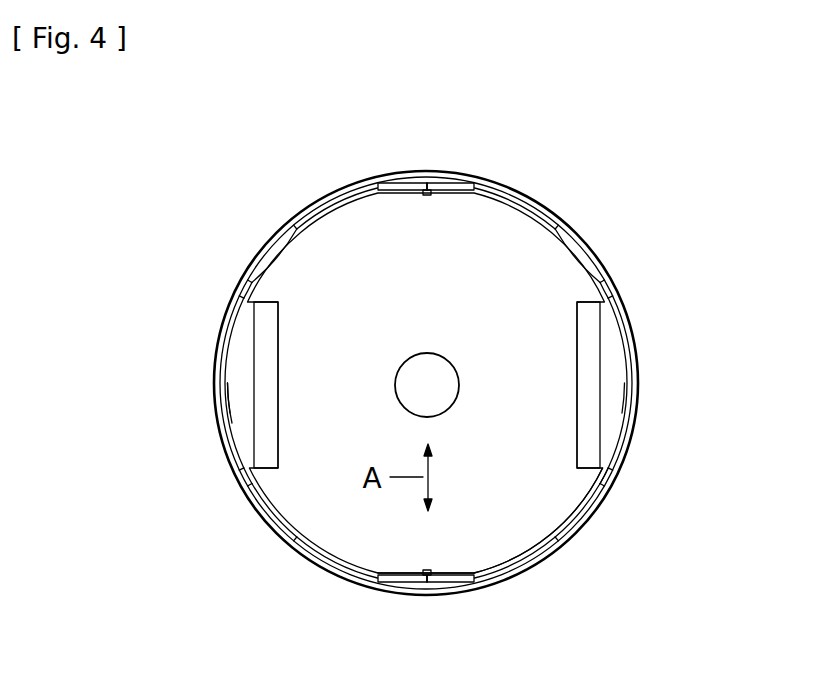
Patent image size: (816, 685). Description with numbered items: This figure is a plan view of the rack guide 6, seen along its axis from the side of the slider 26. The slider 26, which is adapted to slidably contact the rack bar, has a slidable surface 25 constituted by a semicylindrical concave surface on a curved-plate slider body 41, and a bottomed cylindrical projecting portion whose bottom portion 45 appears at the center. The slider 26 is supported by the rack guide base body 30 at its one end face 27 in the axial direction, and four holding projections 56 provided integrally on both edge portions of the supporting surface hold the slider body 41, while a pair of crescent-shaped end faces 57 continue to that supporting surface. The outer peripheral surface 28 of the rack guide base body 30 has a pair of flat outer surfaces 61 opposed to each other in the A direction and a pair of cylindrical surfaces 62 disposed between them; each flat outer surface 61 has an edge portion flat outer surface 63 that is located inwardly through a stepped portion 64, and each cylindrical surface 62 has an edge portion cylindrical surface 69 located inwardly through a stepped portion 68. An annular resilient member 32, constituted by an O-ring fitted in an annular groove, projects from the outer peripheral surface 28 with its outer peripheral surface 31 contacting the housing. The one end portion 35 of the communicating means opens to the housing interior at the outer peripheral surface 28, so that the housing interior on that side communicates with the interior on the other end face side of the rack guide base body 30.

The rack guide 6 is at (255, 251).
The slidable surface 25 is at (523, 278).
The slider 26 is at (608, 335).
The one end face 27 is at (235, 412).
The outer peripheral surface 28 is at (237, 297).
The rack guide base body 30 is at (616, 460).
The outer peripheral surface 31 is at (290, 548).
The annular resilient member 32 is at (418, 585).
The one end portion 35 is at (423, 190).
The slider body 41 is at (513, 490).
The bottom portion 45 is at (412, 395).
The holding projection 56 is at (300, 218).
The crescent-shaped end face 57 is at (238, 393).
The flat outer surface 61 is at (447, 176).
The cylindrical surface 62 is at (219, 380).
The edge portion flat outer surface 63 is at (381, 183).
The stepped portion 64 is at (456, 185).
The stepped portion 68 is at (233, 330).
The edge portion cylindrical surface 69 is at (597, 260).